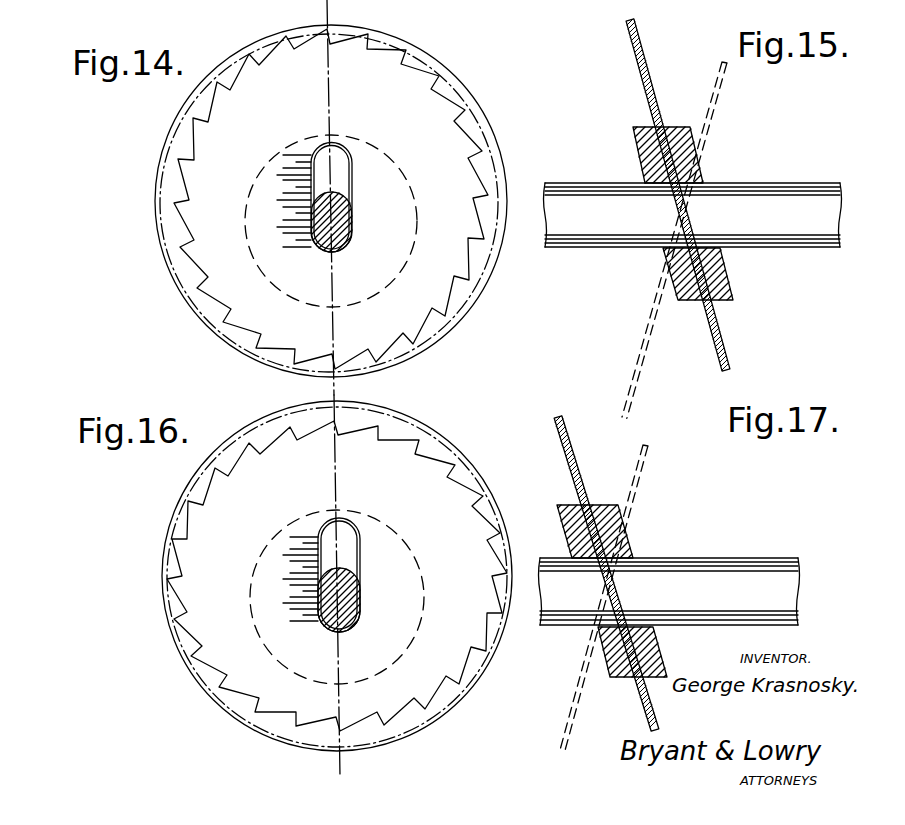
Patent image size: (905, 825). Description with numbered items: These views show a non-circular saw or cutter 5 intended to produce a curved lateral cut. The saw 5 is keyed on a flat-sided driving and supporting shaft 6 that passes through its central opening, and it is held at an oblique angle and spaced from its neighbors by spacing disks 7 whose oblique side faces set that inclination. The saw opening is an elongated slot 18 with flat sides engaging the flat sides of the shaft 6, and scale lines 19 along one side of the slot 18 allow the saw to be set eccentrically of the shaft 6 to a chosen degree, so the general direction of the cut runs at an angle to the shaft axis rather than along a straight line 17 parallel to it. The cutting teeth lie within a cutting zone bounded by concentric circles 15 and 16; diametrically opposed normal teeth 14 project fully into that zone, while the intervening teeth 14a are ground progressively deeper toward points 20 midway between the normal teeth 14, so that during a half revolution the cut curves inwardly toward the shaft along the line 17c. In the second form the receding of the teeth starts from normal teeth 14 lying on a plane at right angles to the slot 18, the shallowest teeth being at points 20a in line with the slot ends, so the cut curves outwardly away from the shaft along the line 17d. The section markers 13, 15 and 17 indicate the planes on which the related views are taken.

In FIG. 14, the saw or cutter 5 is at (407, 92).
In FIG. 16, the saw or cutter 5 is at (393, 487).
In FIG. 15, the saw or cutter 5 is at (641, 67).
In FIG. 17, the saw or cutter 5 is at (556, 434).
In FIG. 14, the driving and supporting shaft 6 is at (340, 222).
In FIG. 16, the driving and supporting shaft 6 is at (350, 607).
In FIG. 15, the driving and supporting shaft 6 is at (605, 186).
In FIG. 17, the driving and supporting shaft 6 is at (727, 558).
In FIG. 14, the spacing disk 7 is at (403, 187).
In FIG. 16, the spacing disk 7 is at (423, 563).
In FIG. 15, the spacing disk 7 is at (650, 127).
In FIG. 17, the spacing disk 7 is at (600, 505).
In FIG. 14, the section line 13- 13 is at (327, 5).
In FIG. 14, the cutting teeth 14 is at (302, 43).
In FIG. 16, the cutting teeth 14 is at (488, 577).
In FIG. 15, the cutting teeth 14 is at (634, 22).
In FIG. 14, the teeth 14a is at (449, 115).
In FIG. 16, the teeth 14a is at (500, 513).
In FIG. 17, the teeth 14a is at (559, 416).
In FIG. 14, the circle defining cutting zone 15 is at (327, 19).
In FIG. 16, the circle defining cutting zone 15 is at (198, 472).
In FIG. 14, the circle defining cutting zone 16 is at (188, 157).
In FIG. 16, the circle defining cutting zone 16 is at (197, 530).
In FIG. 16, the straight line of cut 17 is at (323, 390).
In FIG. 15, the inwardly curved line of cut 17c is at (631, 412).
In FIG. 17, the outwardly curved line of cut 17d is at (561, 750).
In FIG. 14, the elongated slot 18 is at (352, 173).
In FIG. 16, the elongated slot 18 is at (358, 565).
In FIG. 15, the elongated slot 18 is at (675, 170).
In FIG. 17, the elongated slot 18 is at (601, 542).
In FIG. 14, the scale lines 19 is at (290, 214).
In FIG. 16, the scale lines 19 is at (293, 580).
In FIG. 14, the points midway between normal teeth 20 is at (171, 205).
In FIG. 16, the points in line with slot ends 20a is at (339, 425).